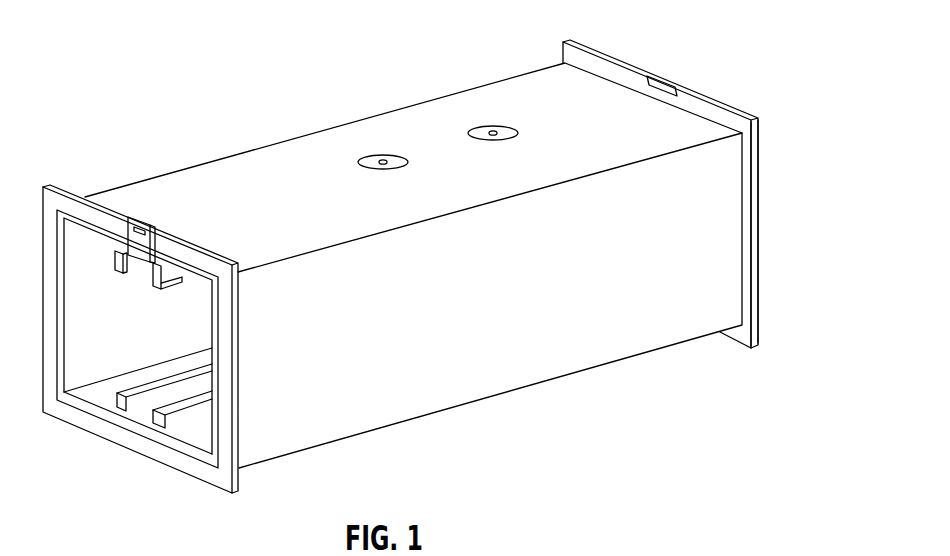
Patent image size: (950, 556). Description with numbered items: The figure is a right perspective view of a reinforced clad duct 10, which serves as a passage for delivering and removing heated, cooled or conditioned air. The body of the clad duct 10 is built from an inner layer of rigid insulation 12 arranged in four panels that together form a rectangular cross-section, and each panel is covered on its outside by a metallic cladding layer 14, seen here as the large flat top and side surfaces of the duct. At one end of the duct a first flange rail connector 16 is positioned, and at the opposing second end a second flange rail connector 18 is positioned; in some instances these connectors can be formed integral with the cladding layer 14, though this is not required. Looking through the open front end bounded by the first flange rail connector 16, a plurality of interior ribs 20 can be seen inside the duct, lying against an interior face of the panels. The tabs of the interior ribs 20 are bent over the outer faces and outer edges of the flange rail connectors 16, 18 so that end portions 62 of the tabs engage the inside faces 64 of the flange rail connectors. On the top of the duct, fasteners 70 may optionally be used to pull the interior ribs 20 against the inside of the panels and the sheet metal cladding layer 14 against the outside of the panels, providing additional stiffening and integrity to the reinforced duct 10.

The clad duct 10 is at (143, 66).
The inner layer of rigid insulation 12 is at (173, 440).
The cladding layer 14 is at (313, 160).
The first flange rail connector 16 is at (238, 378).
The second flange rail connector 18 is at (665, 189).
The interior ribs 20 is at (172, 281).
The end portions 62 is at (140, 218).
The inside faces 64 is at (735, 122).
The fasteners 70 is at (382, 158).